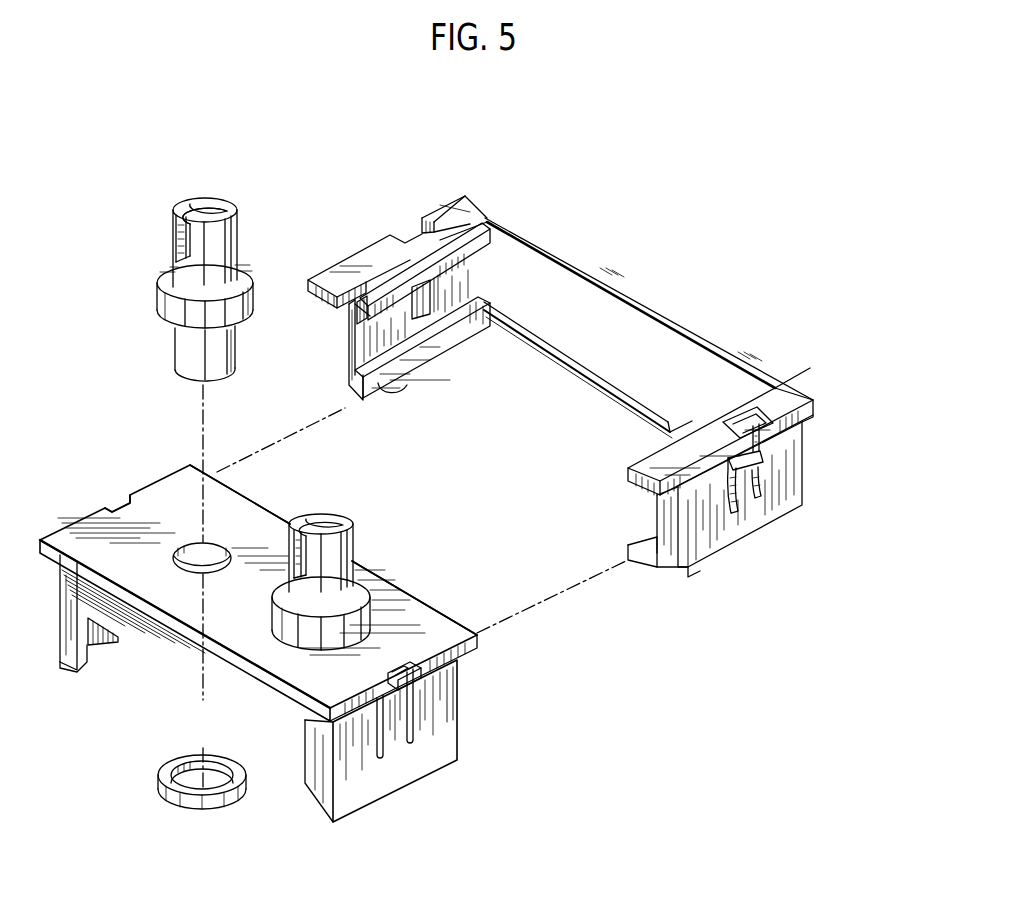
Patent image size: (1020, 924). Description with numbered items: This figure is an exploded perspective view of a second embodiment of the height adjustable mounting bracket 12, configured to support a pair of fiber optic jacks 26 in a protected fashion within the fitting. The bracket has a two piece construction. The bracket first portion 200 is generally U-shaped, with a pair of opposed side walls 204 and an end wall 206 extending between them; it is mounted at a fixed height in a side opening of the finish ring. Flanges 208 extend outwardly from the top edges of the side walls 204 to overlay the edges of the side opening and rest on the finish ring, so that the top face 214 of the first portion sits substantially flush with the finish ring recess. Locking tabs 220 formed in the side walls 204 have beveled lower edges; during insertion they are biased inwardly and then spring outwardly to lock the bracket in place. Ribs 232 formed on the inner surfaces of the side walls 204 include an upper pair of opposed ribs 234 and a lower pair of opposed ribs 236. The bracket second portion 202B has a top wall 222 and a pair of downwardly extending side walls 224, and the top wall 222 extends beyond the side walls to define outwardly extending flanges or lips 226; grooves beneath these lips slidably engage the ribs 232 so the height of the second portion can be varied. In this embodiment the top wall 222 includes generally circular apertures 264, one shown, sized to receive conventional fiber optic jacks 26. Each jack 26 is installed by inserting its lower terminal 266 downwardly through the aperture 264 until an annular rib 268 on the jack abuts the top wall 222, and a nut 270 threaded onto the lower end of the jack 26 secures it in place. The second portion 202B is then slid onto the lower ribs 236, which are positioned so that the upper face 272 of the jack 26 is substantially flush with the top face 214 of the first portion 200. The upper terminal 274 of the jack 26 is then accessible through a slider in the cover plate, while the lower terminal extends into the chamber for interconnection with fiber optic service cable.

The mounting bracket 12 is at (576, 464).
The fiber optic jack 26 is at (232, 246).
The bracket first portion 200 is at (632, 290).
The bracket second portion 202B is at (253, 518).
The side walls 204 is at (350, 358).
The end wall 206 is at (613, 377).
The flanges 208 is at (425, 215).
The top face 214 is at (470, 212).
The locking tabs 220 is at (763, 455).
The top wall 222 is at (408, 608).
The side walls 224 is at (105, 647).
The flanges or lips 226 is at (460, 652).
The ribs 232 is at (523, 412).
The upper ribs 234 is at (500, 222).
The lower ribs 236 is at (417, 353).
The apertures 264 is at (130, 512).
The lower terminal 266 is at (176, 358).
The annular rib 268 is at (155, 296).
The nut 270 is at (160, 787).
The upper face 272 is at (178, 207).
The upper terminal 274 is at (218, 204).